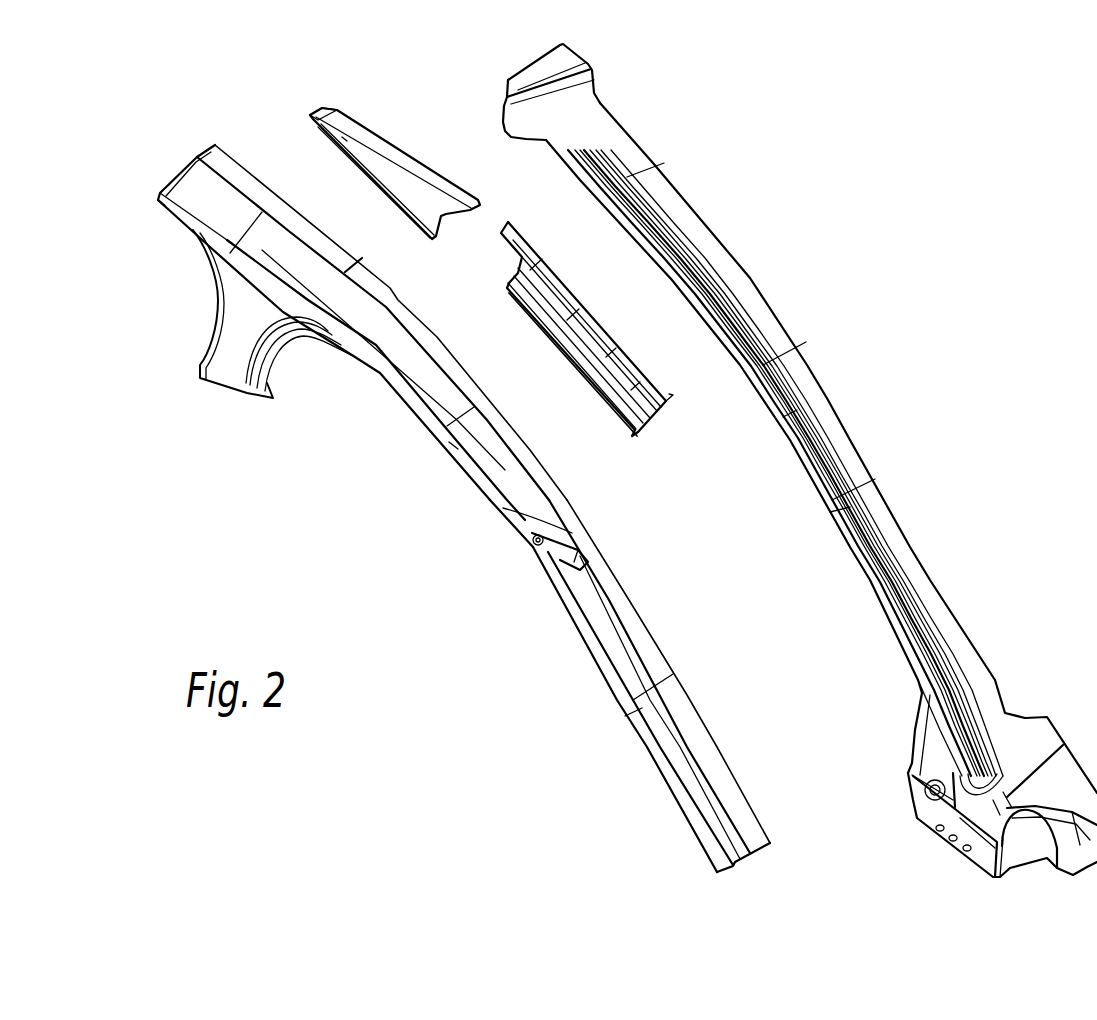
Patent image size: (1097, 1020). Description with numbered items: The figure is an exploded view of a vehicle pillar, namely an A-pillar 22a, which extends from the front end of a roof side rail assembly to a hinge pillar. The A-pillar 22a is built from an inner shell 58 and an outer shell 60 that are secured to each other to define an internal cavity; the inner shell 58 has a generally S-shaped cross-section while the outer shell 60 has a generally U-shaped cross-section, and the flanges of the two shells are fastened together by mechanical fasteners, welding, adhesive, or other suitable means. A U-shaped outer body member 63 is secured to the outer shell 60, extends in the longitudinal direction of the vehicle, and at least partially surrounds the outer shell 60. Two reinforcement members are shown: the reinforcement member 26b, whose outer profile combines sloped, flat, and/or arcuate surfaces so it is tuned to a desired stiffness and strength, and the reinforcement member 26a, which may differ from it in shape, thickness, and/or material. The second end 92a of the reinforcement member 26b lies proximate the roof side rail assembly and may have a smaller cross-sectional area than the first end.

The A-pillar 22a is at (464, 482).
The outer body member 63 is at (284, 139).
The outer shell 60 is at (673, 790).
The reinforcement member 26b is at (329, 147).
The second end 92a is at (306, 113).
The reinforcement member 26a is at (527, 334).
The inner shell 58 is at (942, 612).